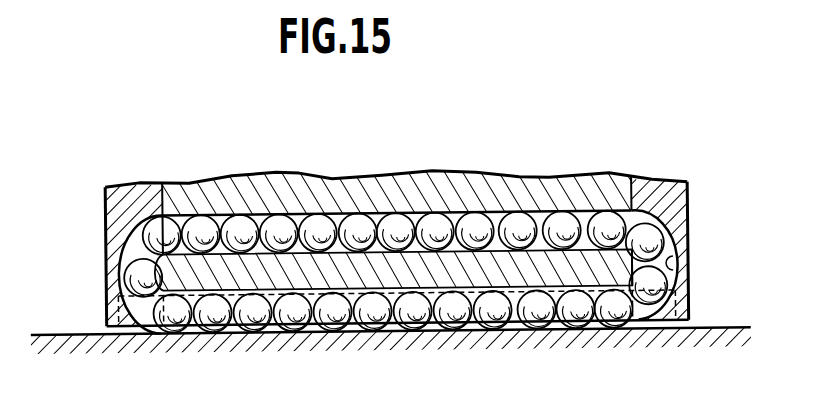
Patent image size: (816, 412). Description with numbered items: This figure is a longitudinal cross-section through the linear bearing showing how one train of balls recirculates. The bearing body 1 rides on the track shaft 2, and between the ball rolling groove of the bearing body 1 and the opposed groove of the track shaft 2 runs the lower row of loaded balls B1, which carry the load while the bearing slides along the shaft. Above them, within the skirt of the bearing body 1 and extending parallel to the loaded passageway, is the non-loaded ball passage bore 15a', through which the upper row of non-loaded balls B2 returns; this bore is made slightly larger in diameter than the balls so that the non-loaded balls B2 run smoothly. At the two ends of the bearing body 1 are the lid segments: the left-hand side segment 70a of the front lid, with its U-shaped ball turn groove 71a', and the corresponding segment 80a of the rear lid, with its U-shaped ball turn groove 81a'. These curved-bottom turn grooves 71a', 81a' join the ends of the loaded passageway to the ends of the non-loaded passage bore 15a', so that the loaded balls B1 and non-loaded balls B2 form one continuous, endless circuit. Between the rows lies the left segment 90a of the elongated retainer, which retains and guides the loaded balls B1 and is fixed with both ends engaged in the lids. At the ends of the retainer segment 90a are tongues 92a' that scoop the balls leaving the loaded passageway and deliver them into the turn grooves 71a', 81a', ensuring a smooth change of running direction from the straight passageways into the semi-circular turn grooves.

The bearing body 1 is at (291, 190).
The track shaft 2 is at (460, 386).
The non-loaded ball passage bore 15a' is at (397, 176).
The left-hand side segment of lid 70a is at (138, 194).
The U-shaped ball turn groove 71a' is at (108, 275).
The left-hand side segment of lid 80a is at (653, 195).
The U-shaped ball turn groove 81a' is at (690, 264).
The left segment of retainer 90a is at (125, 330).
The tongue 92a' is at (420, 341).
The loaded balls B1 is at (372, 310).
The non-loaded balls B2 is at (436, 228).